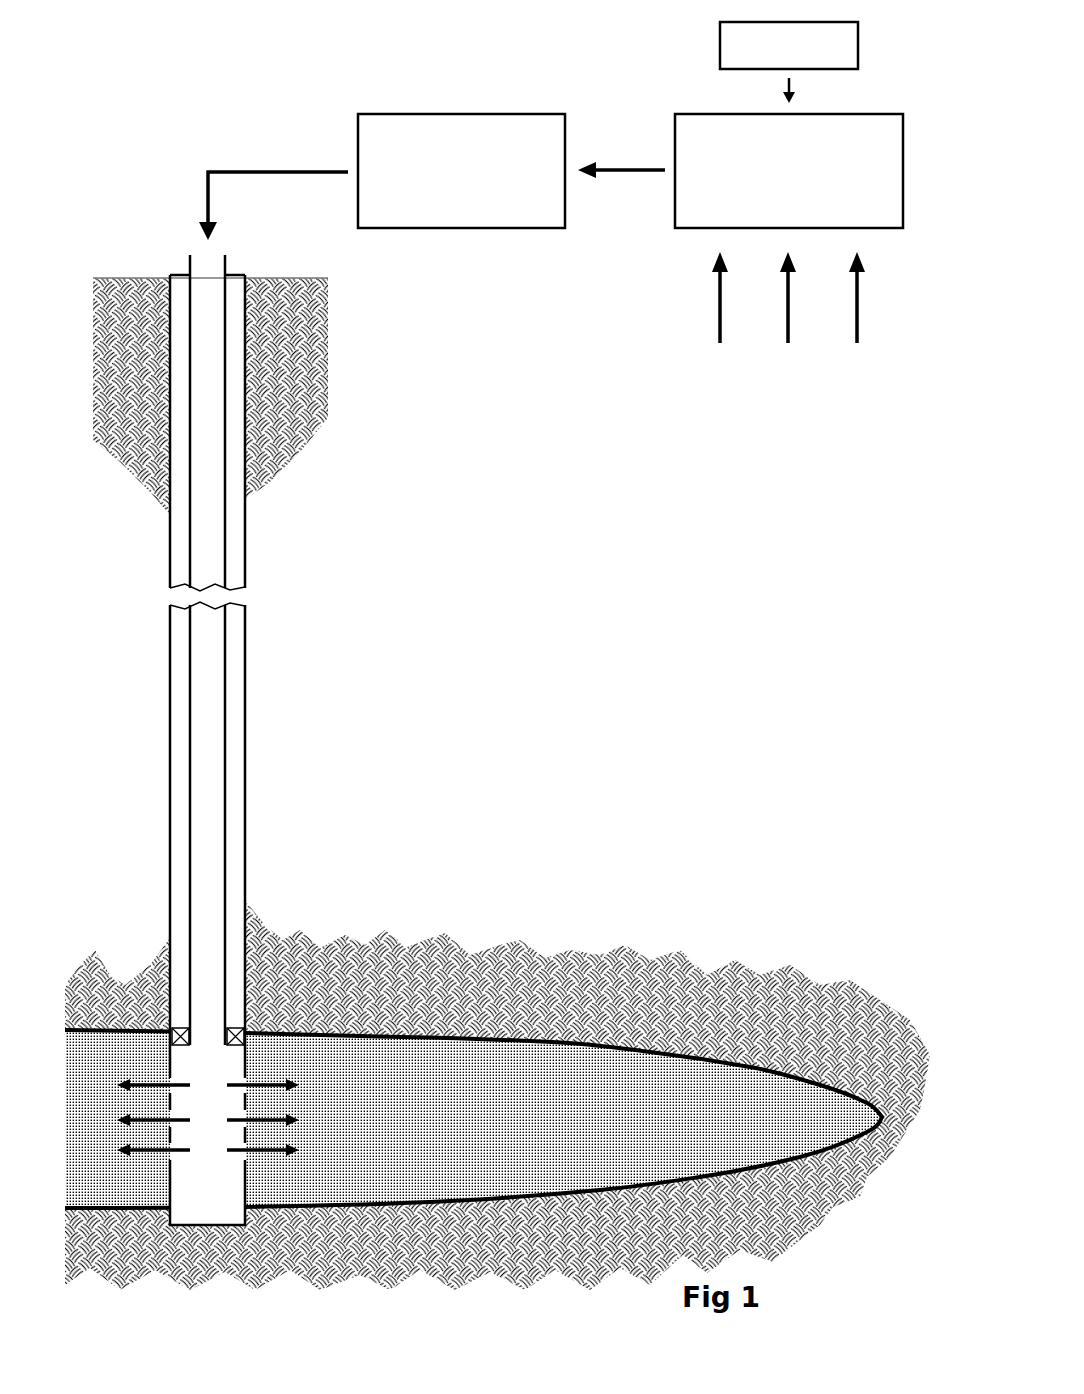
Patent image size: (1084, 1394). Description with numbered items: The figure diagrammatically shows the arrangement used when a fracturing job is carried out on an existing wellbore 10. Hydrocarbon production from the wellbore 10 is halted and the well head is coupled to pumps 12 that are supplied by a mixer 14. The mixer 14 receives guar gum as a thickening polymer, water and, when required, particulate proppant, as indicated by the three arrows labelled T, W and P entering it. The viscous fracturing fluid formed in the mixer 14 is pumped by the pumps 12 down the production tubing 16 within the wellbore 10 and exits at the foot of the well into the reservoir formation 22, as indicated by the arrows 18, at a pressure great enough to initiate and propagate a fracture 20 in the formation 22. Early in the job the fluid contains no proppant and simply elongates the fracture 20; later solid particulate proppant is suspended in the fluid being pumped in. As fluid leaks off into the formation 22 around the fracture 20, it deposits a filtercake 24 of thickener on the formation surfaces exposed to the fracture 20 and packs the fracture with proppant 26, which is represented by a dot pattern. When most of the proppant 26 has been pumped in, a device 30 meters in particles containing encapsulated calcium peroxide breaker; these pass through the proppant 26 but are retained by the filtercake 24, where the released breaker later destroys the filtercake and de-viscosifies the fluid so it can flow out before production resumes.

The wellbore 10 is at (266, 730).
The pumps 12 is at (382, 177).
The mixer 14 is at (740, 246).
The production tubing 16 is at (227, 548).
The arrows 18 is at (255, 1118).
The fracture 20 is at (733, 1105).
The reservoir formation 22 is at (680, 998).
The filtercake 24 is at (552, 1042).
The proppant 26 is at (403, 1078).
The device 30 is at (789, 62).